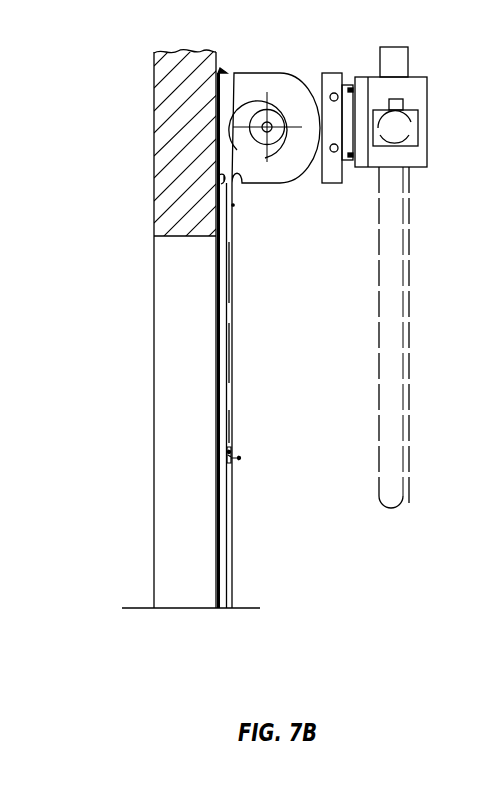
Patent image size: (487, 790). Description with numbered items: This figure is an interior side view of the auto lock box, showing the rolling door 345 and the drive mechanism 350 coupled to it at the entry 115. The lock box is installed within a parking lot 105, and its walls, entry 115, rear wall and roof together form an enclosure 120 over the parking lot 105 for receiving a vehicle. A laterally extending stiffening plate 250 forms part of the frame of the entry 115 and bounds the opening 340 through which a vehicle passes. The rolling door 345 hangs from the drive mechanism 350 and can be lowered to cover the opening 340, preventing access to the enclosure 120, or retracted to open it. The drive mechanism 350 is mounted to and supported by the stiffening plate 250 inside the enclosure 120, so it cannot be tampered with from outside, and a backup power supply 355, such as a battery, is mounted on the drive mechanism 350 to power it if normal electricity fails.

The parking lot 105 is at (145, 608).
The entry 115 is at (139, 319).
The enclosure 120 is at (458, 361).
The stiffening plate 250 is at (154, 133).
The opening 340 is at (207, 432).
The rolling door 345 is at (232, 340).
The drive mechanism 350 is at (274, 72).
The backup power supply 355 is at (405, 47).